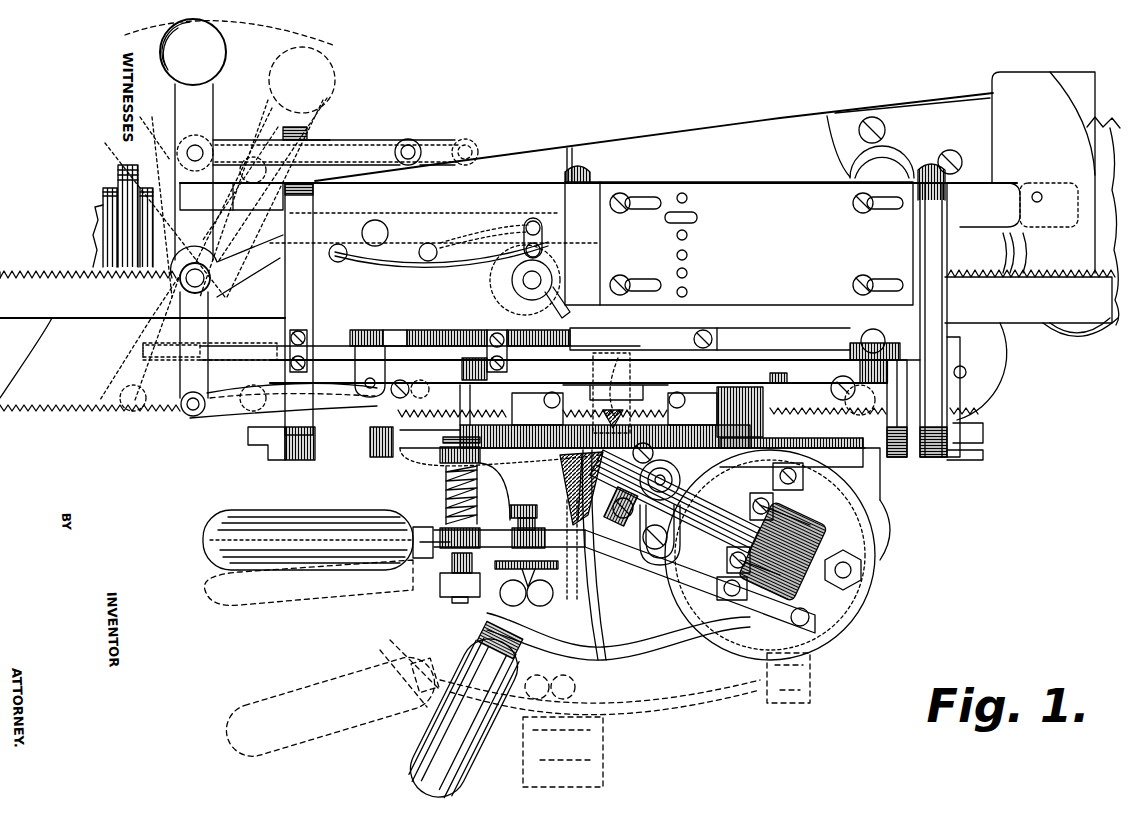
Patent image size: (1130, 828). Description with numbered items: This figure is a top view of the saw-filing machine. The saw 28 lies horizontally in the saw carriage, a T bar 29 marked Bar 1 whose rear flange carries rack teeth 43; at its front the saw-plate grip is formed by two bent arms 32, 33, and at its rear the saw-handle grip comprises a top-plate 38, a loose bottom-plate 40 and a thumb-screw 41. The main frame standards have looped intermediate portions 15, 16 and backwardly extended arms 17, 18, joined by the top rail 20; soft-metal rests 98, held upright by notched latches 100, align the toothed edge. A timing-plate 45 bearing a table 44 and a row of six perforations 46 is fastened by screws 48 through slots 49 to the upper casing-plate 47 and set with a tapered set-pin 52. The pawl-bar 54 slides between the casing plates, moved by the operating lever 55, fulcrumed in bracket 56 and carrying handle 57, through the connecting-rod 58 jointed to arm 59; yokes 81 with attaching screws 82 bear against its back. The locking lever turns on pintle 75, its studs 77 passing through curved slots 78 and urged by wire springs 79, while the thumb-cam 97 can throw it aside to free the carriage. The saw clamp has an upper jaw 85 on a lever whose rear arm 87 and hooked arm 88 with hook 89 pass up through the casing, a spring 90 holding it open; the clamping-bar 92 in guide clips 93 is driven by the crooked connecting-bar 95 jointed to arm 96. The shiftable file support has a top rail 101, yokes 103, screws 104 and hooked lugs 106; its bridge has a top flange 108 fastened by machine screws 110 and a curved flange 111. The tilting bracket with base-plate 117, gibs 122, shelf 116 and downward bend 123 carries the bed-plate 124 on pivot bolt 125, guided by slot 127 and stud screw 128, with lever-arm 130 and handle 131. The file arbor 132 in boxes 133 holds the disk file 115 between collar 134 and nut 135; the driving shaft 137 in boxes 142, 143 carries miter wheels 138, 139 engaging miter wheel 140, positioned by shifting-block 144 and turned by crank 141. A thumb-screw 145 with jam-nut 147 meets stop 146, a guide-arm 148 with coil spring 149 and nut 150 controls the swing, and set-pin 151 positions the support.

The Bar 1 is at (1031, 326).
The intermediate portion of end standard 15 is at (945, 460).
The intermediate portion of end standard 16 is at (300, 460).
The backwardly extended top or arm 17 is at (948, 250).
The backwardly extended top or arm 18 is at (313, 286).
The top rail 20 is at (802, 370).
The saw 28 is at (90, 364).
The T bar 29 is at (142, 294).
The bent arm 32 is at (128, 170).
The bent arm 33 is at (330, 140).
The top-plate 38 is at (1056, 198).
The bottom-plate 40 is at (1077, 85).
The thumb-screw 41 is at (1041, 193).
The teeth 43 is at (15, 288).
The table 44 is at (770, 245).
The timing-plate 45 is at (823, 276).
The perforations 46 is at (677, 275).
The upper casing-plate 47 is at (570, 190).
The screws 48 is at (621, 193).
The slots 49 is at (648, 196).
The set-pin 52 is at (683, 193).
The pawl-bar 54 is at (629, 205).
The operating lever 55 is at (251, 173).
The bracket 56 is at (191, 325).
The handle 57 is at (230, 66).
The connecting-rod 58 is at (320, 140).
The arm 59 is at (408, 183).
The pintle 75 is at (370, 222).
The studs 77 is at (520, 262).
The curved slots 78 is at (530, 216).
The wire springs 79 is at (415, 263).
The vertical yokes 81 is at (575, 170).
The attaching screws 82 is at (580, 170).
The upper jaw 85 is at (623, 410).
The arm 87 is at (885, 347).
The hooked arm 88 is at (372, 330).
The hook 89 is at (400, 332).
The spring 90 is at (643, 339).
The clamping-bar 92 is at (322, 345).
The guide clips 93 is at (296, 328).
The crooked connecting-bar 95 is at (220, 416).
The arm 96 is at (370, 371).
The thumb-cam 97 is at (518, 290).
The retiring stops or rests 98 is at (250, 437).
The notched latches 100 is at (290, 380).
The top rail 101 is at (727, 360).
The vertical yokes 103 is at (372, 427).
The screws 104 is at (410, 388).
The hooked lugs 106 is at (473, 365).
The top flange 108 is at (645, 385).
The machine screws 110 is at (550, 404).
The top curved-edged vertical flange 111 is at (458, 432).
The circular revolving file 115 is at (590, 607).
The shelf 116 is at (875, 557).
The base-plate 117 is at (445, 449).
The gibs 122 is at (430, 450).
The downward bend 123 is at (600, 652).
The bed-plate 124 is at (840, 632).
The pivot bolt 125 is at (900, 587).
The slot 127 is at (668, 532).
The stud screw 128 is at (677, 539).
The lever-arm 130 is at (447, 572).
The handle 131 is at (318, 557).
The file arbor 132 is at (748, 574).
The boxes 133 is at (700, 493).
The collar 134 is at (685, 470).
The fastening nut 135 is at (558, 478).
The driving shaft 137 is at (862, 577).
The miter gear wheel 138 is at (850, 602).
The miter gear wheel 139 is at (875, 547).
The miter wheel 140 is at (810, 592).
The handled crank 141 is at (483, 628).
The box 142 is at (790, 632).
The box 143 is at (860, 517).
The shifting-block 144 is at (830, 612).
The thumb-screw 145 is at (445, 617).
The stop 146 is at (526, 537).
The milled jam-nut 147 is at (462, 603).
The guide-arm 148 is at (446, 502).
The coil spring 149 is at (450, 518).
The nut 150 is at (420, 612).
The set-pin 151 is at (852, 414).